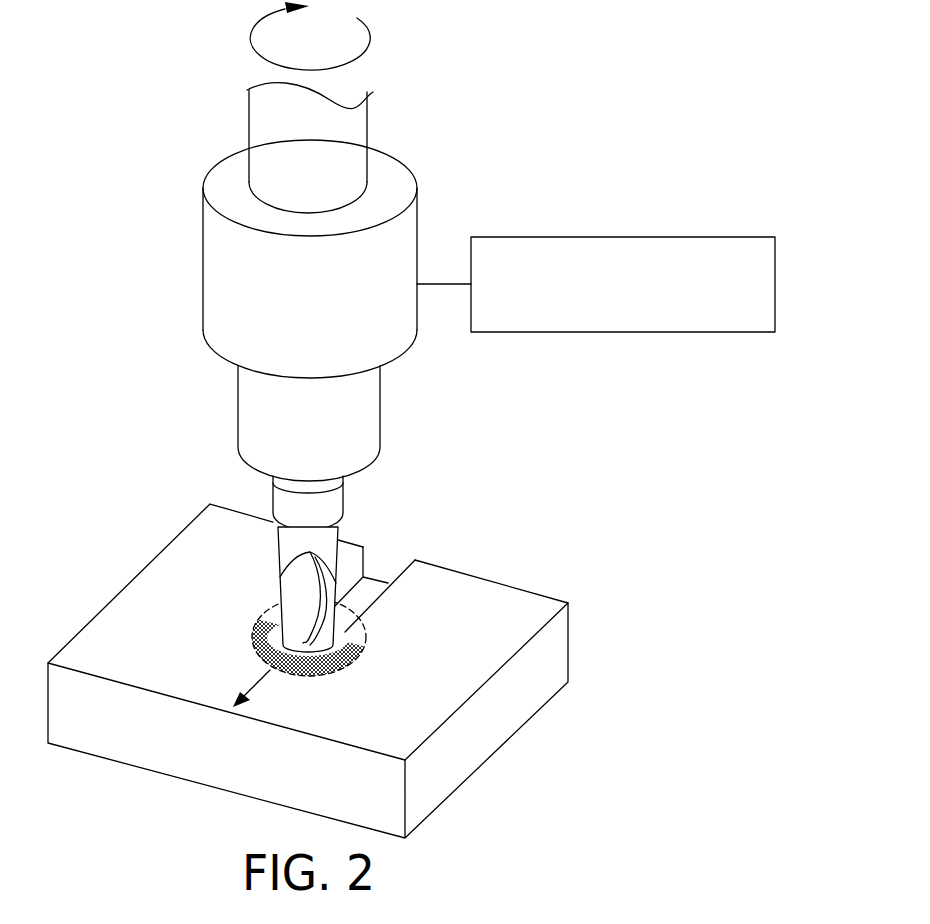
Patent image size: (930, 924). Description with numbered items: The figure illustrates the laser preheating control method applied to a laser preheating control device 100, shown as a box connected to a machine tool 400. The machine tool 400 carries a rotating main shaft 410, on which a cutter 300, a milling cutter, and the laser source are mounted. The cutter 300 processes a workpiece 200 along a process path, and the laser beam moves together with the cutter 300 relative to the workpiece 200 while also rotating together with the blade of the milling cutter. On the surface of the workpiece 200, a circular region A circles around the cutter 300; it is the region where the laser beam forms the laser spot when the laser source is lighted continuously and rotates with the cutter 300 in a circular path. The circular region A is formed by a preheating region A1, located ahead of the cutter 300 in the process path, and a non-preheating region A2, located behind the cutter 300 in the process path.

The laser preheating control device 100 is at (577, 236).
The workpiece 200 is at (120, 623).
The cutter 300 is at (333, 553).
The machine tool 400 is at (278, 266).
The main shaft 410 is at (230, 280).
The circular region A is at (479, 666).
The preheating region A1 is at (330, 663).
The non-preheating region A2 is at (357, 633).